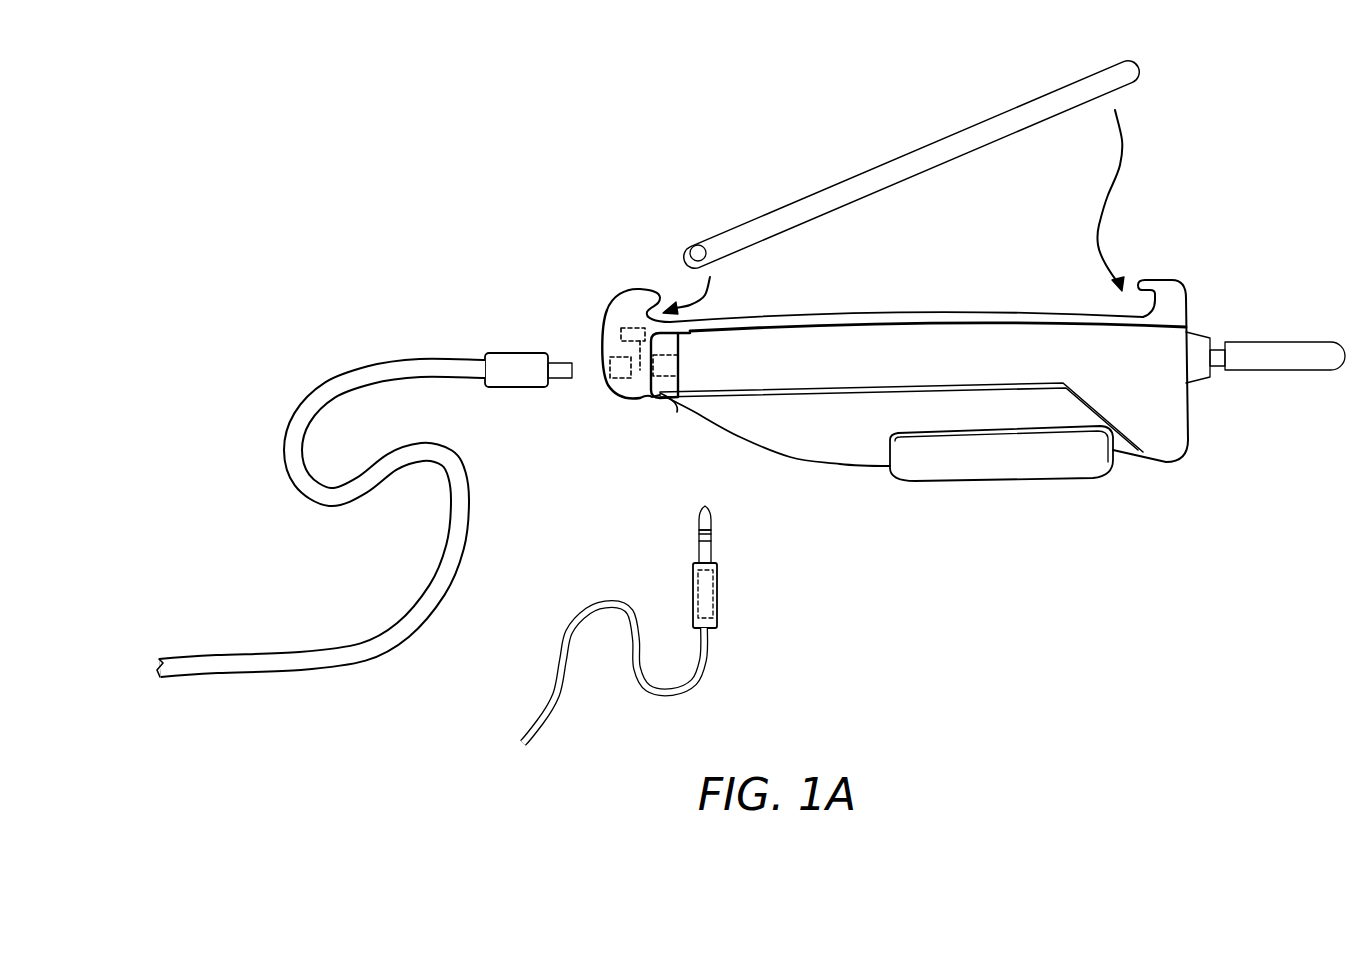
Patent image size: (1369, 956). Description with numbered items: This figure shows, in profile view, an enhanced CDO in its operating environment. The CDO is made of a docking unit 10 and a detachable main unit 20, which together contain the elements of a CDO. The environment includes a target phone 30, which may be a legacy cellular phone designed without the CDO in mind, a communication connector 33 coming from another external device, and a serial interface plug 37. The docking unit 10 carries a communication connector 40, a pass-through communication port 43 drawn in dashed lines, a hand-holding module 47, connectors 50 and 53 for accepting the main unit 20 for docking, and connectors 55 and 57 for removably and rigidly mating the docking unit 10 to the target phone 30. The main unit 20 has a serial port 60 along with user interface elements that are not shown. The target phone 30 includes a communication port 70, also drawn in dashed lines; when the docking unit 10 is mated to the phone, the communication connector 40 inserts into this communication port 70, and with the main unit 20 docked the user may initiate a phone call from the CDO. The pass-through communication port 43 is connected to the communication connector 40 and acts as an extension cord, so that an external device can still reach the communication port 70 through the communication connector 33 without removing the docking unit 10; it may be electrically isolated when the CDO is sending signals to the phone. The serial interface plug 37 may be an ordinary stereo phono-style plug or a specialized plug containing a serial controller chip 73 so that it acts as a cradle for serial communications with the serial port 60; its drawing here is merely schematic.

The docking unit 10 is at (1177, 283).
The main unit 20 is at (890, 158).
The target phone 30 is at (1188, 415).
The communication connector 33 is at (527, 388).
The serial interface plug 37 is at (712, 528).
The communication connector 40 is at (677, 405).
The pass-through communication port 43 is at (604, 352).
The hand-holding module 47 is at (608, 316).
The connector 50 is at (632, 292).
The connector 53 is at (1140, 280).
The connector 57 is at (1188, 322).
The connector 55 is at (632, 398).
The serial port 60 is at (696, 246).
The communication port 70 is at (677, 357).
The serial controller chip 73 is at (717, 585).